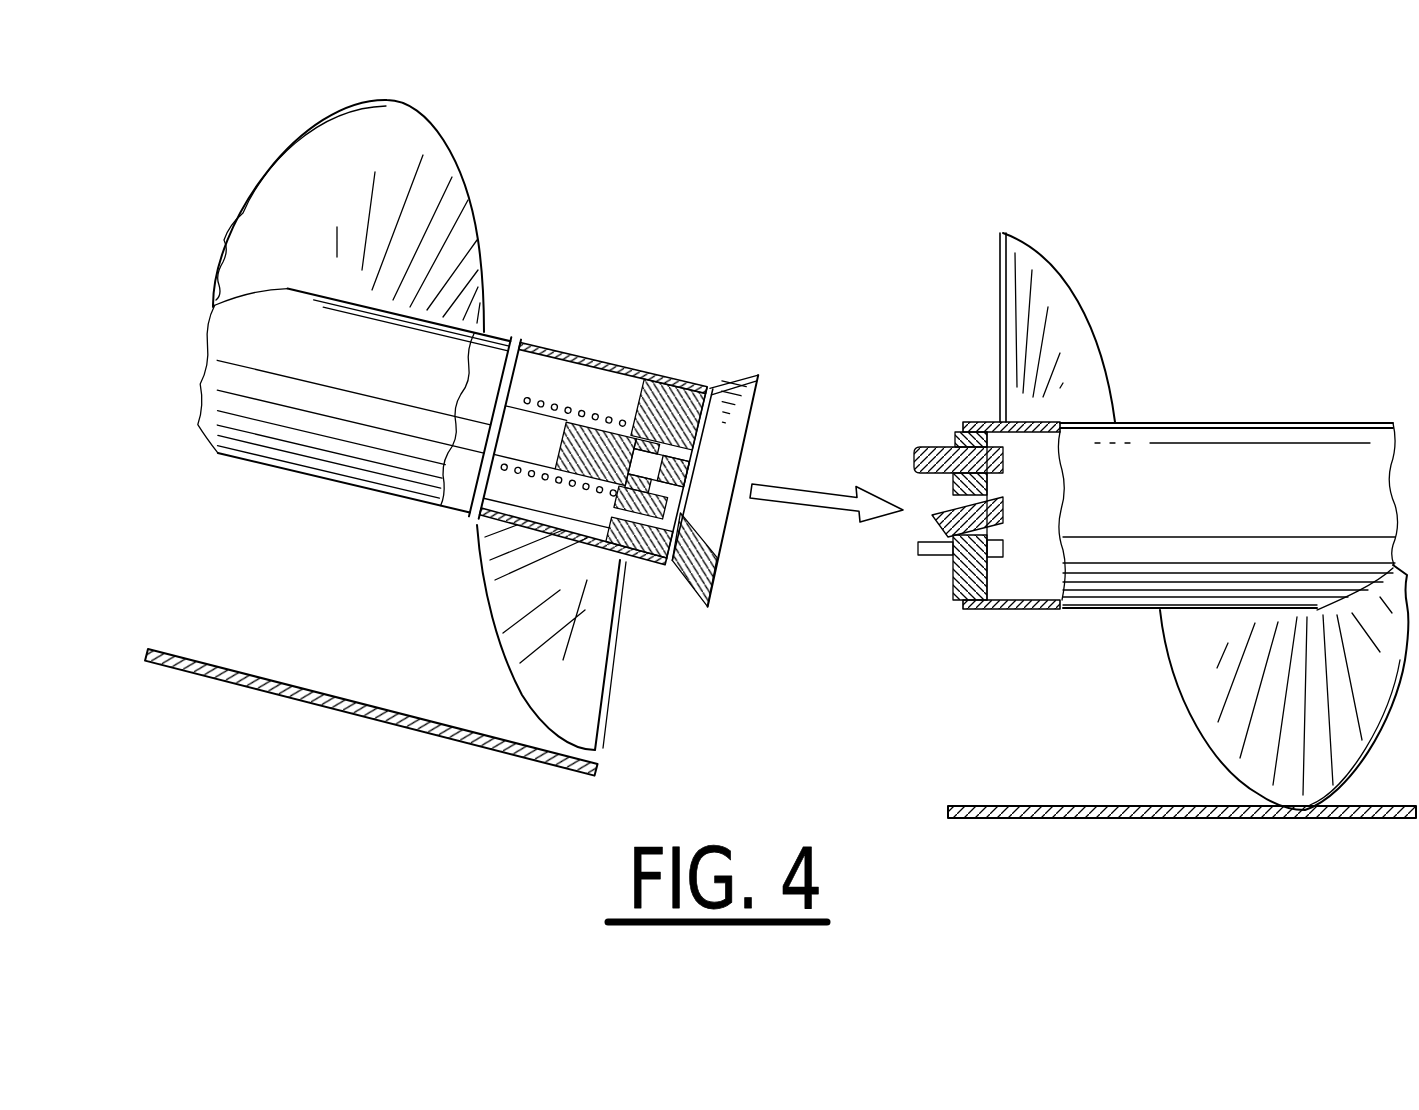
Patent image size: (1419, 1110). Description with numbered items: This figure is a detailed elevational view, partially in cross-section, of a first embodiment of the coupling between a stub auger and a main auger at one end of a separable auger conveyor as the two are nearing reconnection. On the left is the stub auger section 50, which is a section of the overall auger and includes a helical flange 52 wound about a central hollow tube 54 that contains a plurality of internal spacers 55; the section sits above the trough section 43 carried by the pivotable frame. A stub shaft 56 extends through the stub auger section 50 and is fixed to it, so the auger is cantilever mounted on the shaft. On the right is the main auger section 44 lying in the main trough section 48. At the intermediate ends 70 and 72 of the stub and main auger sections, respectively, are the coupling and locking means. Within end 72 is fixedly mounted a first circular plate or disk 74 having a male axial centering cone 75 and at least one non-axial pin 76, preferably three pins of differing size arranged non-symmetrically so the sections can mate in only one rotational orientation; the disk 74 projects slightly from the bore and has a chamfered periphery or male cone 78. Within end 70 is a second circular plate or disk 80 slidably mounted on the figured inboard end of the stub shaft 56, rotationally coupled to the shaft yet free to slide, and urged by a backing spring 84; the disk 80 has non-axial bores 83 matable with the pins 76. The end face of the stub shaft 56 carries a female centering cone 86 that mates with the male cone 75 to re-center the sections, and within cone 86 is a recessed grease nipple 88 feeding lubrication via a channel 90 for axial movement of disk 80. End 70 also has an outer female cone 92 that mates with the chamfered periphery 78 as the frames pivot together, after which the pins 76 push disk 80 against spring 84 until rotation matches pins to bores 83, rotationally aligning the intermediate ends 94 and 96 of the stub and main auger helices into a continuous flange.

The trough section 43 is at (312, 707).
The main auger section 44 is at (1172, 412).
The main trough section 48 is at (1140, 805).
The stub auger section 50 is at (338, 492).
The helical flange 52 is at (468, 195).
The central hollow tube 54 is at (502, 325).
The internal spacers 55 is at (474, 505).
The stub shaft 56 is at (470, 496).
The intermediate end of stub auger section 70 is at (604, 455).
The intermediate end of main auger section 72 is at (940, 486).
The first circular plate or disk 74 is at (963, 603).
The male axial centering cone 75 is at (945, 512).
The non-axial pin 76 is at (916, 455).
The chamfered periphery or male cone 78 is at (968, 432).
The second circular plate or disk 80 is at (672, 395).
The non-axial bores 83 is at (647, 522).
The backing spring 84 is at (597, 412).
The female centering cone 86 is at (698, 468).
The recessed grease nipple 88 is at (695, 505).
The channel 90 is at (712, 566).
The outer female cone 92 is at (707, 607).
The intermediate end of stub auger helix 94 is at (605, 716).
The intermediate end of main auger helix 96 is at (998, 300).